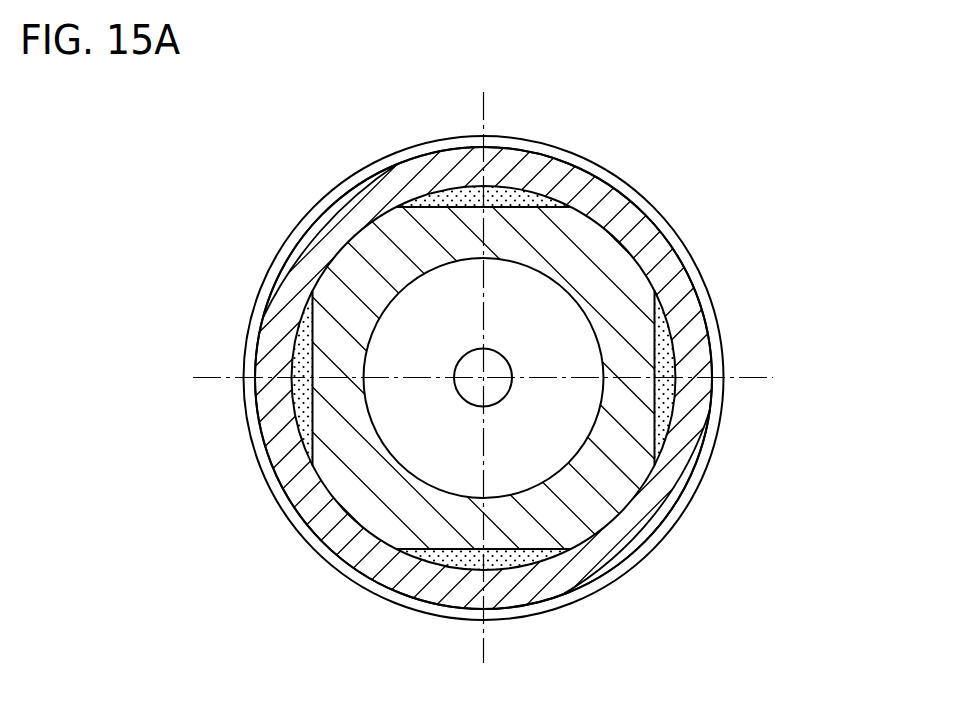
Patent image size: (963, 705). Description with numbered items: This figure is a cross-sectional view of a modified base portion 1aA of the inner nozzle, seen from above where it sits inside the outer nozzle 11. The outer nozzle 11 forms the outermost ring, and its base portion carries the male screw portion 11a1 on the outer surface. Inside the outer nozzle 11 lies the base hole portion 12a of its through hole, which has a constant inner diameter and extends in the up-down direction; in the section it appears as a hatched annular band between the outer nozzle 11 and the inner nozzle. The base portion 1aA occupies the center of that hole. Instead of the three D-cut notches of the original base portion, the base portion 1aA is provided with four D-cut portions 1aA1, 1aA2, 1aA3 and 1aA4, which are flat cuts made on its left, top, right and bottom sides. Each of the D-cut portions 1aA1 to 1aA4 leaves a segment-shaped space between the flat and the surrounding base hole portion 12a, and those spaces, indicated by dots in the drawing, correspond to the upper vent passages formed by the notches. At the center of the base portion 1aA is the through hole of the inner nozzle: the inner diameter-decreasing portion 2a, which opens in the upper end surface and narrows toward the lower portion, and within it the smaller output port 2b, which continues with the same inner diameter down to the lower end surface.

The outer nozzle 11 is at (692, 252).
The male screw portion 11a1 is at (701, 289).
The base hole portion 12a is at (596, 528).
The base portion 1aA is at (640, 488).
The D-cut portion 1aA1 is at (298, 352).
The D-cut portion 1aA2 is at (507, 199).
The D-cut portion 1aA3 is at (672, 395).
The D-cut portion 1aA4 is at (495, 551).
The inner diameter-decreasing portion 2a is at (590, 430).
The output port 2b is at (489, 398).